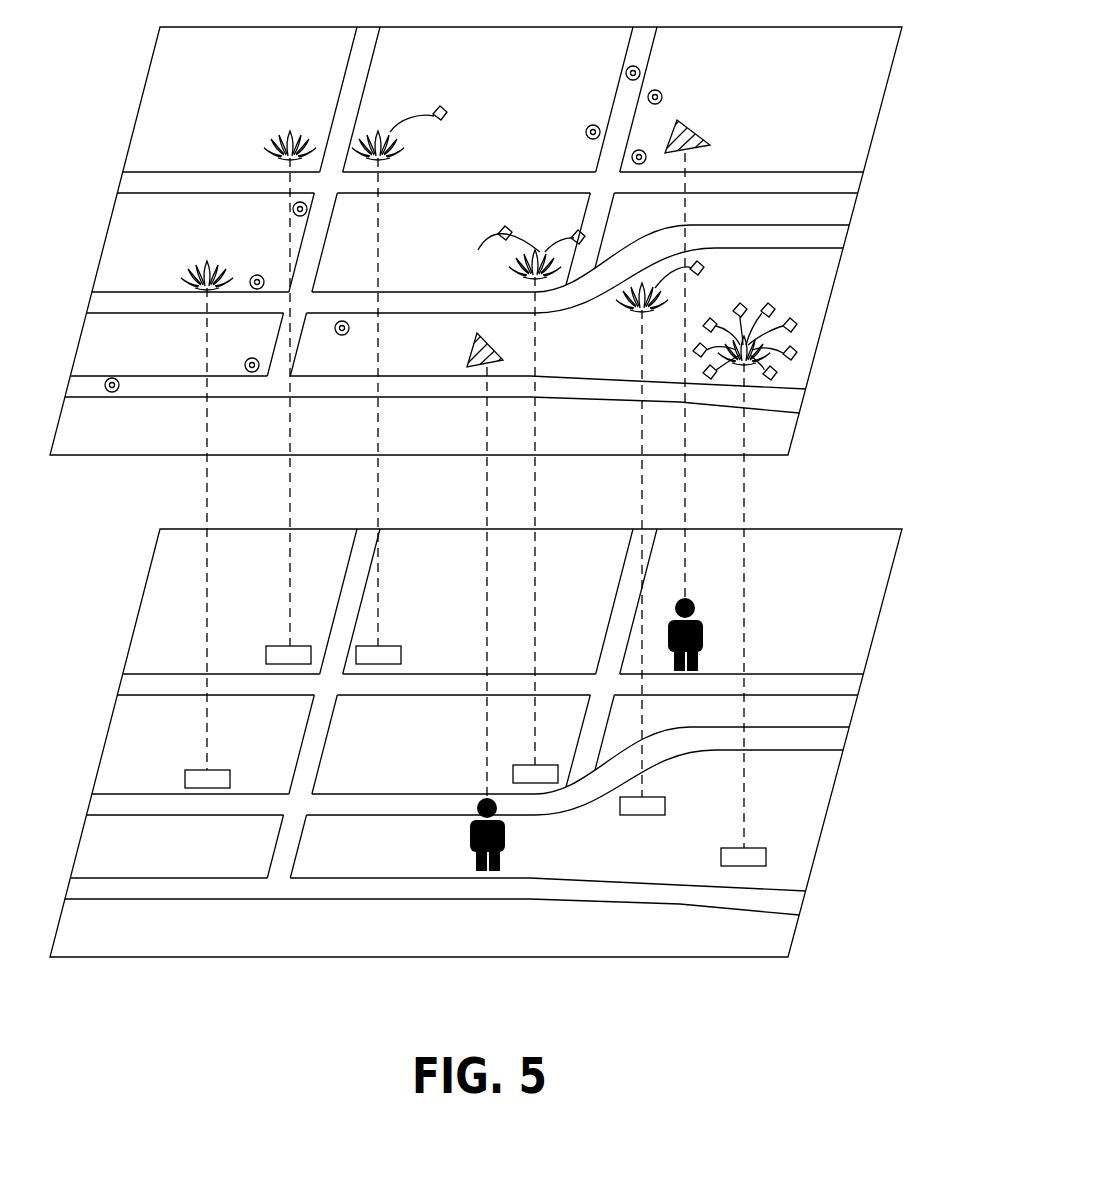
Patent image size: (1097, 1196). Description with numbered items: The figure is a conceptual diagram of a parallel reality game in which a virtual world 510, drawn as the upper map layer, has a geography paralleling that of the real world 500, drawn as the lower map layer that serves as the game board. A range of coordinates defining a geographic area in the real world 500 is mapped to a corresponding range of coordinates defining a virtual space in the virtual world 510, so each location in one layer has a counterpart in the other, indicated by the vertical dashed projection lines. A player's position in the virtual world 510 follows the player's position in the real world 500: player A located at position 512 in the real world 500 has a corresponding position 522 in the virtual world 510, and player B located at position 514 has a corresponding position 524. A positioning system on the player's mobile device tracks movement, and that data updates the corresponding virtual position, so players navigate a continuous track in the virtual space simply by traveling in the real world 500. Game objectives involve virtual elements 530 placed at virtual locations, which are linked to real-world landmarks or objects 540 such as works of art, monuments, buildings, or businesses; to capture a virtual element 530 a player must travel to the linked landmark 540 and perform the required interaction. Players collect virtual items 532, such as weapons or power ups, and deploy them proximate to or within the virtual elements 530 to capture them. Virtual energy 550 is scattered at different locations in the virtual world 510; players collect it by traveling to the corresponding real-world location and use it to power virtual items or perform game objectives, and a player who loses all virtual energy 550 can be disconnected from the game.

The real world 500 is at (878, 624).
The virtual world 510 is at (867, 148).
The position of player A in the real world 512 is at (468, 840).
The position of player B in the real world 514 is at (702, 623).
The corresponding position of player A in the virtual world 522 is at (500, 359).
The corresponding position of player B in the virtual world 524 is at (703, 146).
The virtual elements 530 is at (290, 130).
The virtual items 532 is at (447, 108).
The real-world landmarks or objects 540 is at (285, 645).
The virtual energy 550 is at (668, 96).